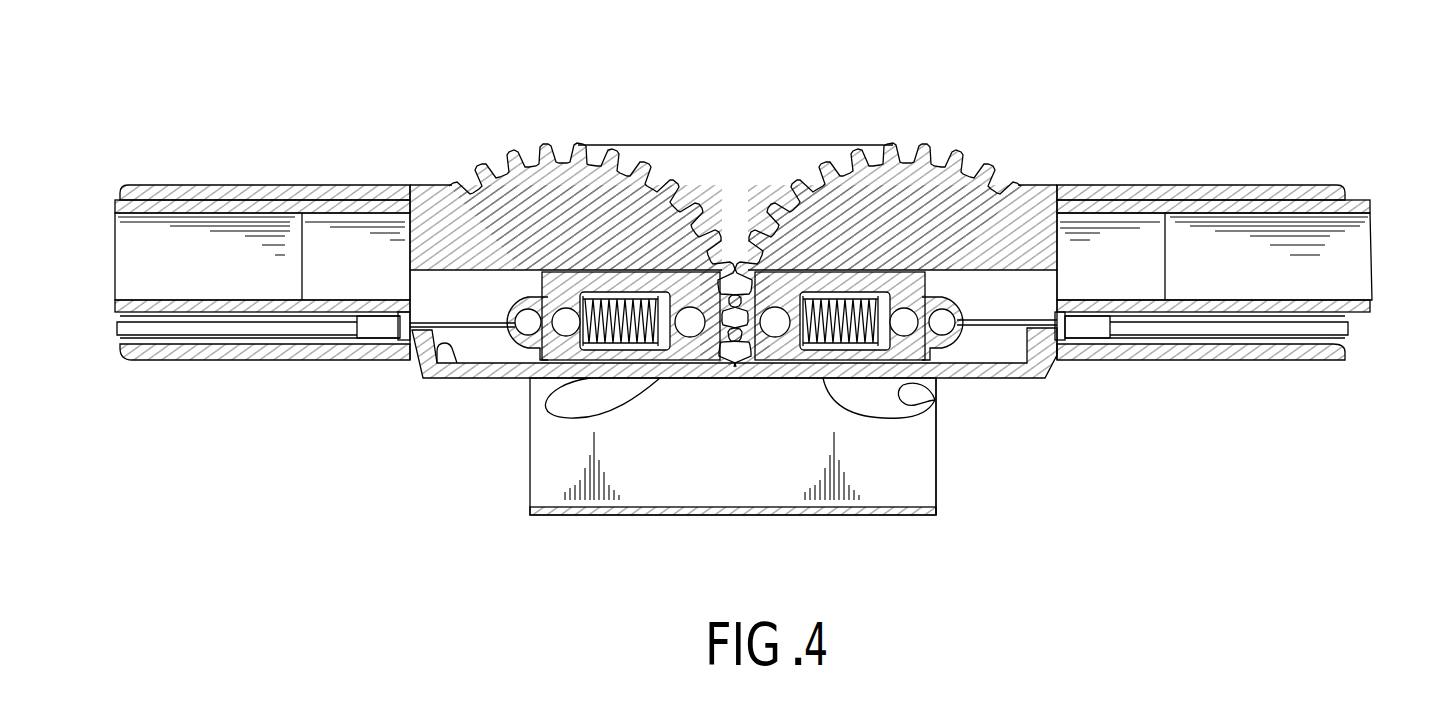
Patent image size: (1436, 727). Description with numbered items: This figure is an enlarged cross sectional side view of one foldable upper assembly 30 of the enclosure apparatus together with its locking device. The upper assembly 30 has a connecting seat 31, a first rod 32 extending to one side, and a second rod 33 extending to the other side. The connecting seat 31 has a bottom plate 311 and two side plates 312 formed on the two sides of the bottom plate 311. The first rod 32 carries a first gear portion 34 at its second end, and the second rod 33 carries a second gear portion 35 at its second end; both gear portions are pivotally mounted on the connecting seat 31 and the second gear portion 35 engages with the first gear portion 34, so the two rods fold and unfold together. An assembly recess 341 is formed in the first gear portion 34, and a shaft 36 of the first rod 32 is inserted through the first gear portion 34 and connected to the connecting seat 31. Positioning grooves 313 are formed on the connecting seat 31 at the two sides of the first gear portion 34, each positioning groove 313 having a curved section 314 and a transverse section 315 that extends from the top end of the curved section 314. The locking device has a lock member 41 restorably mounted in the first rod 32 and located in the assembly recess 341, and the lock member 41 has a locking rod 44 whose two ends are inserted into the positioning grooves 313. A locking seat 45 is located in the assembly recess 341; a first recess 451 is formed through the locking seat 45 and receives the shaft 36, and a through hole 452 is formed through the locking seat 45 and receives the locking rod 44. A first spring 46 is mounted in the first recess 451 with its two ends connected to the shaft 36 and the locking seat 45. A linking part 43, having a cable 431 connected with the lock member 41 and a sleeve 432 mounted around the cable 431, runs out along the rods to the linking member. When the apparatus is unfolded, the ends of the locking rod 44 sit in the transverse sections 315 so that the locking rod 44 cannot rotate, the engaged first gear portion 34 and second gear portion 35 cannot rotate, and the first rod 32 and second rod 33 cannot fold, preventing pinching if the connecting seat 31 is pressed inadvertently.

The upper assembly 30 is at (778, 107).
The connecting seat 31 is at (947, 510).
The bottom plate 311 is at (866, 517).
The side plate 312 is at (925, 478).
The positioning groove 313 is at (913, 422).
The curved section 314 is at (925, 402).
The transverse section 315 is at (685, 378).
The first rod 32 is at (115, 212).
The second rod 33 is at (1355, 212).
The first gear portion 34 is at (512, 164).
The assembly recess 341 is at (441, 343).
The second gear portion 35 is at (940, 156).
The shaft 36 is at (537, 300).
The lock member 41 is at (967, 337).
The linking part 43 is at (1119, 338).
The cable 431 is at (1017, 322).
The sleeve 432 is at (1358, 325).
The locking rod 44 is at (693, 310).
The locking seat 45 is at (553, 362).
The first recess 451 is at (621, 343).
The through hole 452 is at (773, 338).
The first spring 46 is at (832, 345).